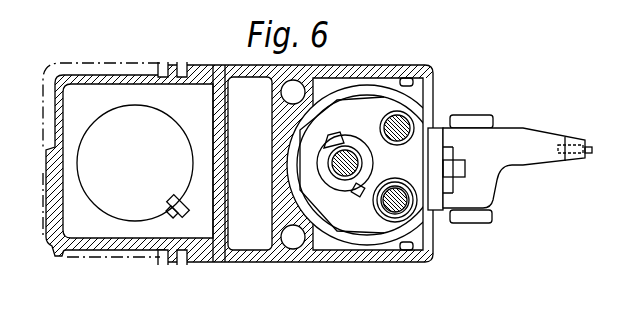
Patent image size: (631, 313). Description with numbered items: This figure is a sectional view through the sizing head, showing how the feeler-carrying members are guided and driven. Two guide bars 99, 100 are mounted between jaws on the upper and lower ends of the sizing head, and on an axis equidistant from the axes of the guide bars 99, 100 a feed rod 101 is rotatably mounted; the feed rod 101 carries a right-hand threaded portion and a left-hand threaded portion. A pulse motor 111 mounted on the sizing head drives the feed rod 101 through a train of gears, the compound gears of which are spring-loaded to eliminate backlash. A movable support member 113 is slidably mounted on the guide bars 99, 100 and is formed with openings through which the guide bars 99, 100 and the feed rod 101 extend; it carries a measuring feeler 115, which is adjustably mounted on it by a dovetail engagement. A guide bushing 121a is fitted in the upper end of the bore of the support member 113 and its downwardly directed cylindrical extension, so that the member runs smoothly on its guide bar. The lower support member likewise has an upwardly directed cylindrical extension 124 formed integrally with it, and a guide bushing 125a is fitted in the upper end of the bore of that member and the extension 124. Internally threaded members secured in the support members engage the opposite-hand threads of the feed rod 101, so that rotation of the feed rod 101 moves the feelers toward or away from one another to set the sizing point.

The guide bar 99 is at (448, 77).
The guide bar 100 is at (412, 212).
The feed rod 101 is at (352, 146).
The pulse motor 111 is at (173, 140).
The movable support member 113 is at (398, 110).
The measuring feeler 115 is at (548, 140).
The guide bushing 121a is at (414, 118).
The cylindrical extension 124 is at (380, 215).
The guide bushing 125a is at (395, 214).